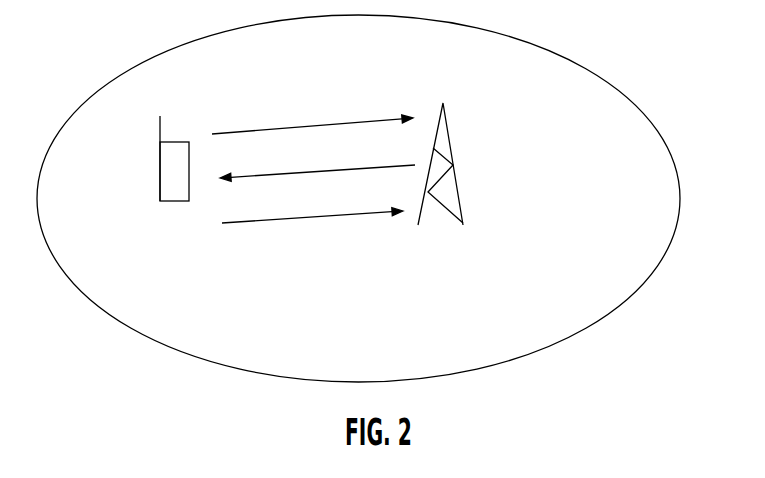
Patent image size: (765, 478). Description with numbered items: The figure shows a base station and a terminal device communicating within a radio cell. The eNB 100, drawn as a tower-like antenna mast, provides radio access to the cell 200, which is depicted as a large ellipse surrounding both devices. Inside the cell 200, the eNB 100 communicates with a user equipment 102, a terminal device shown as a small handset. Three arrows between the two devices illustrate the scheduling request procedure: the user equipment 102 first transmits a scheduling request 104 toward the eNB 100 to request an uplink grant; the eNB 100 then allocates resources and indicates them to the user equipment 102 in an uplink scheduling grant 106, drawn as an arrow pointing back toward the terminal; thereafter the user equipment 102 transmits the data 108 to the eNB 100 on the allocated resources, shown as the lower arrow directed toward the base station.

The cell 200 is at (657, 132).
The user equipment 102 is at (160, 187).
The eNB 100 is at (463, 225).
The scheduling request 104 is at (293, 127).
The uplink scheduling grant 106 is at (305, 171).
The data 108 is at (343, 217).